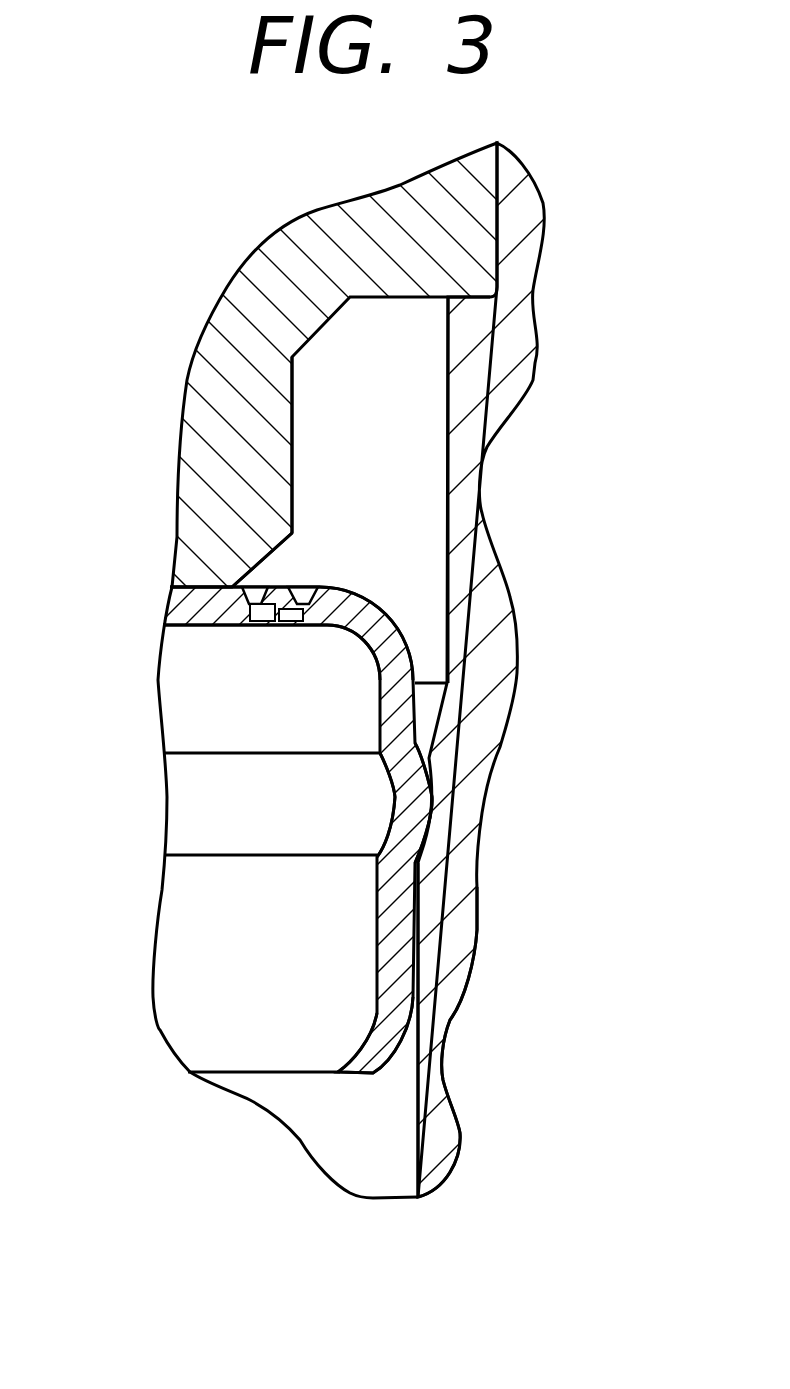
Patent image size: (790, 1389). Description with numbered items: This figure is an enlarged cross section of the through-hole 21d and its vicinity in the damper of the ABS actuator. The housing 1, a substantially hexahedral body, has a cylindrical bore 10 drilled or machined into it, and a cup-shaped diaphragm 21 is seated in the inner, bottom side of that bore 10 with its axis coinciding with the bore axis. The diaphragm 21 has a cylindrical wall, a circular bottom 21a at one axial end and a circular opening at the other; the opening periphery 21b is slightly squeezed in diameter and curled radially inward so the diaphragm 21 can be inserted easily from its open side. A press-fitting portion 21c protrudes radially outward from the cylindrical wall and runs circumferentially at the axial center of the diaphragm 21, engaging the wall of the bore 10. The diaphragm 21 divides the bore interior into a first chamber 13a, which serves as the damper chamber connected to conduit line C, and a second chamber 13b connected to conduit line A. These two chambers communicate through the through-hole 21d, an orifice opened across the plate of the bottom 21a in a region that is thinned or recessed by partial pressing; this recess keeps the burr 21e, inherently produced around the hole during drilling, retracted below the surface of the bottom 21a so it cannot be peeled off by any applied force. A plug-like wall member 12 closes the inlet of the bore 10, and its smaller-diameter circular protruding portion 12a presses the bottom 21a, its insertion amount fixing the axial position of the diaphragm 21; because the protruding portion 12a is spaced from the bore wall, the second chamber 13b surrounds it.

The housing 1 is at (440, 1143).
The cylindrical bore 10 is at (437, 370).
The plug-like wall member 12 is at (483, 220).
The circular protruding portion 12a is at (293, 460).
The first chamber 13a is at (330, 1143).
The second chamber 13b is at (403, 524).
The cup-shaped diaphragm 21 is at (415, 927).
The circular bottom 21a is at (210, 626).
The opening periphery 21b is at (403, 1040).
The press-fitting portion 21c is at (413, 817).
The through-hole 21d is at (277, 632).
The burr 21e is at (313, 586).